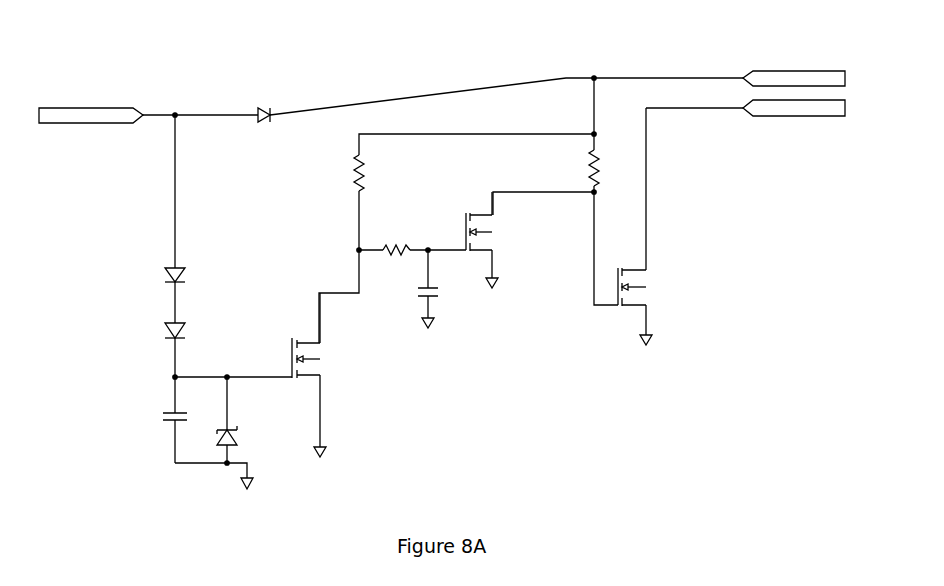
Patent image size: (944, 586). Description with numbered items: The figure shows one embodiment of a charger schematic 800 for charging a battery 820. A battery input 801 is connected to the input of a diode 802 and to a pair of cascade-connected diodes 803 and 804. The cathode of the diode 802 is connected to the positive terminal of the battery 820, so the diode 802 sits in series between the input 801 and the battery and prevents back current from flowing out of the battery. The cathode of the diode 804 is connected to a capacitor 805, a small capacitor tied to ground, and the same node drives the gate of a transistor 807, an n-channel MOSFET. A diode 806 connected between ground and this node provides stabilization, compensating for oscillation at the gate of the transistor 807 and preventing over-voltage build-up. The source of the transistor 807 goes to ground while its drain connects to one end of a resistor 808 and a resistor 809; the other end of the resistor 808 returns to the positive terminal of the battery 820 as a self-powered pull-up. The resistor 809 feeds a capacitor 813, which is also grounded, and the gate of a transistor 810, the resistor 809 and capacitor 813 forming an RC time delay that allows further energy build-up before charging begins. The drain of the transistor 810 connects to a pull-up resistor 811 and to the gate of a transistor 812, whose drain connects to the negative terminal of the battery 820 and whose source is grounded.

The charger schematic 800 is at (122, 52).
The battery input 801 is at (70, 128).
The diode 802 is at (270, 130).
The diode 803 is at (142, 272).
The diode 804 is at (147, 329).
The capacitor 805 is at (157, 469).
The diode 806 is at (245, 433).
The transistor 807 is at (330, 361).
The resistor 808 is at (393, 171).
The resistor 809 is at (395, 233).
The transistor 810 is at (505, 234).
The resistor 811 is at (580, 162).
The transistor 812 is at (663, 288).
The capacitor 813 is at (450, 298).
The battery 820 is at (810, 127).